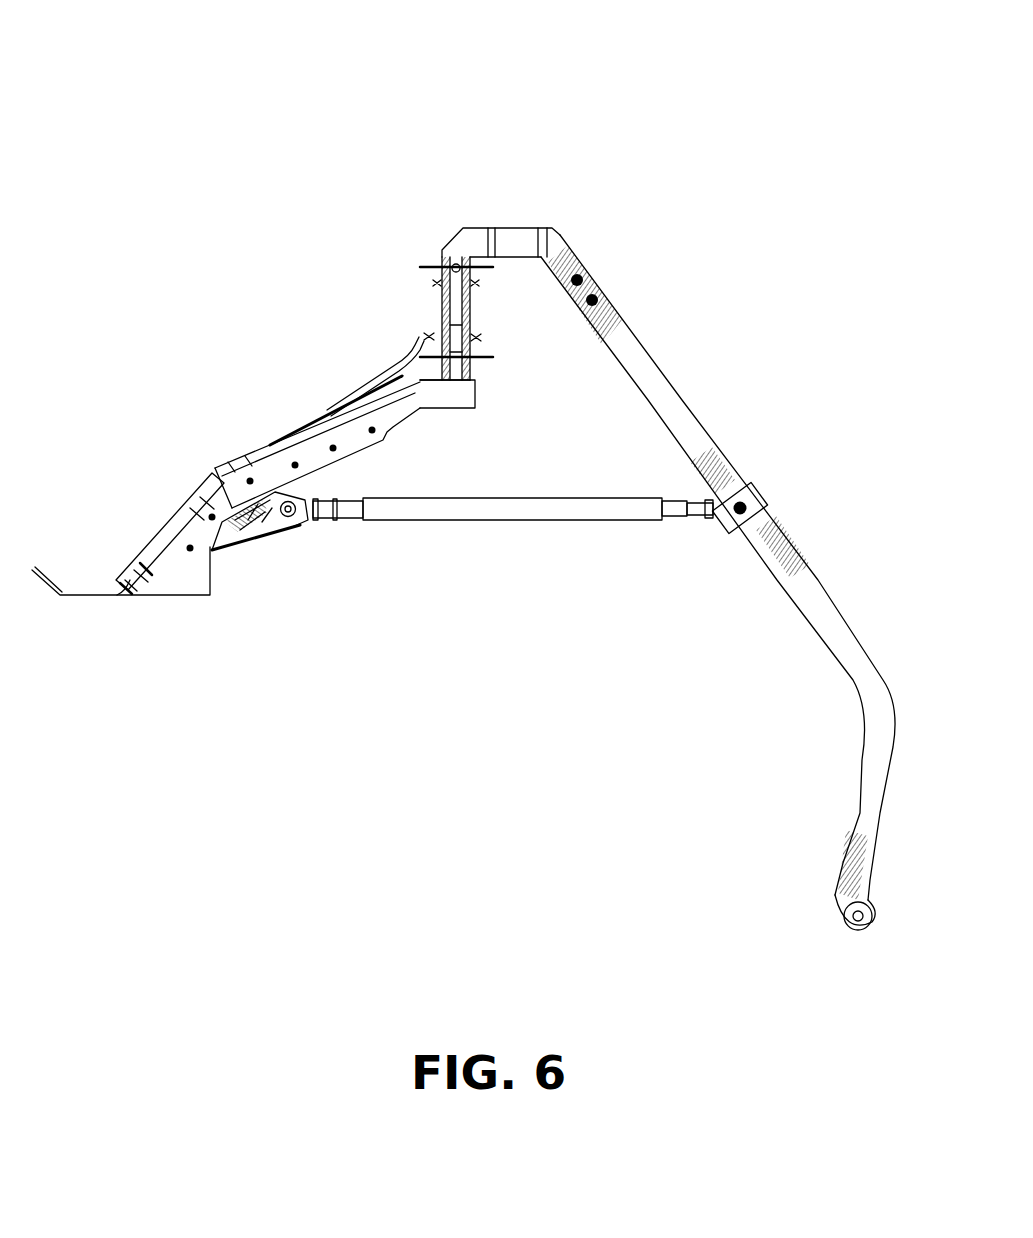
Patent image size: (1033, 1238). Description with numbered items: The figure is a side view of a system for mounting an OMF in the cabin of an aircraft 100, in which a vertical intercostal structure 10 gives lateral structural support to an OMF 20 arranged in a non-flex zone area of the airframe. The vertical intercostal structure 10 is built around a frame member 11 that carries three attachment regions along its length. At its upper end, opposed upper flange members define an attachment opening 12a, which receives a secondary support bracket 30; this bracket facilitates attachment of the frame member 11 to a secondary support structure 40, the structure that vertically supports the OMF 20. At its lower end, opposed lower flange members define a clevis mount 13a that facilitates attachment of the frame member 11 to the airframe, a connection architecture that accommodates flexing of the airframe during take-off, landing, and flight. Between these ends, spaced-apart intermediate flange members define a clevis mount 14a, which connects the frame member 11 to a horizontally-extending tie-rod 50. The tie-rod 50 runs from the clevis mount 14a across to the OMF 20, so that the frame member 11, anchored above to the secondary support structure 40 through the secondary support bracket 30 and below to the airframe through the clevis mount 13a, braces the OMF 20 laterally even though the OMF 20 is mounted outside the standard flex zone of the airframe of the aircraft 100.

The aircraft 100 is at (108, 90).
The vertical intercostal structure 10 is at (703, 258).
The frame member 11 is at (676, 393).
The attachment opening 12a is at (594, 285).
The clevis mount 13a is at (870, 910).
The clevis mount 14a is at (745, 503).
The OMF 20 is at (297, 430).
The secondary support bracket 30 is at (477, 240).
The secondary support structure 40 is at (447, 313).
The tie-rod 50 is at (510, 512).